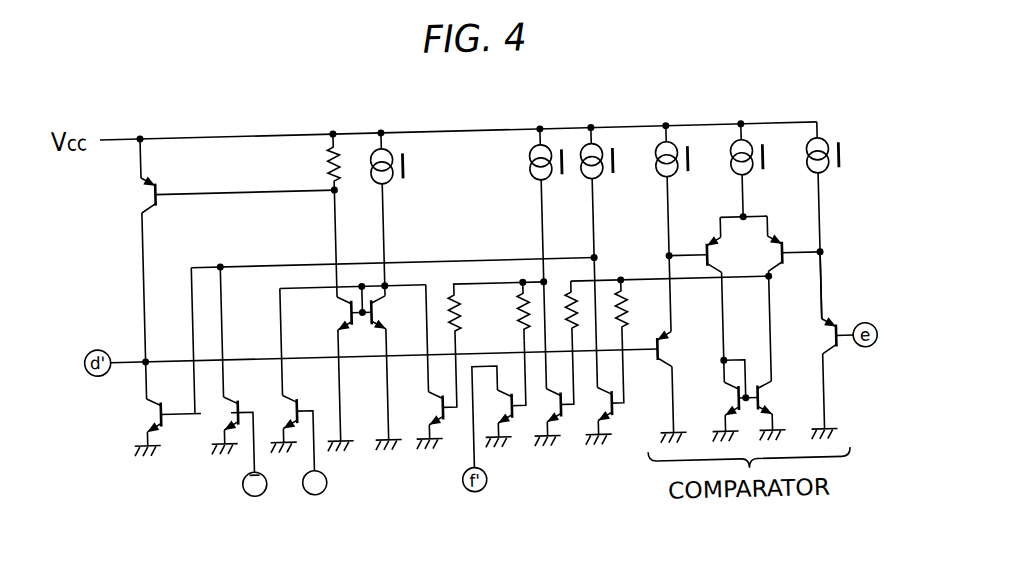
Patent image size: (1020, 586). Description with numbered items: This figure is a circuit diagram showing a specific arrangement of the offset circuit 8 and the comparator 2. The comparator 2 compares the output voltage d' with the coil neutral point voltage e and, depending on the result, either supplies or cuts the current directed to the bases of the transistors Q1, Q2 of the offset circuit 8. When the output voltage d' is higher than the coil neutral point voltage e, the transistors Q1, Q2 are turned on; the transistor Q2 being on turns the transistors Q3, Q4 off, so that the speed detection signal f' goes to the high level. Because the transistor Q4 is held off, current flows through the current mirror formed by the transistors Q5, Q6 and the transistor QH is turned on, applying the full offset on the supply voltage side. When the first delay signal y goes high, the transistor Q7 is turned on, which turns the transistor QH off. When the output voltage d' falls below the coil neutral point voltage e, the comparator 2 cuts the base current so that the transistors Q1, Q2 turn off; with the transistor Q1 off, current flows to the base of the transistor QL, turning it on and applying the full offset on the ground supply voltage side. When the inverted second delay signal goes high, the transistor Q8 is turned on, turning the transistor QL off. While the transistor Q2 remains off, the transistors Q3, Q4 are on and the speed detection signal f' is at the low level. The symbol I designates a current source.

The comparator 2 is at (848, 259).
The offset circuit 8 is at (221, 412).
The transistor QH is at (225, 248).
The transistor QL is at (160, 409).
The transistor Q8 is at (229, 382).
The transistor Q7 is at (290, 391).
The current mirror transistor Q6 is at (333, 374).
The current mirror transistor Q5 is at (396, 372).
The transistor Q4 is at (428, 366).
The transistor Q3 is at (493, 417).
The transistor Q2 is at (550, 392).
The transistor Q1 is at (600, 391).